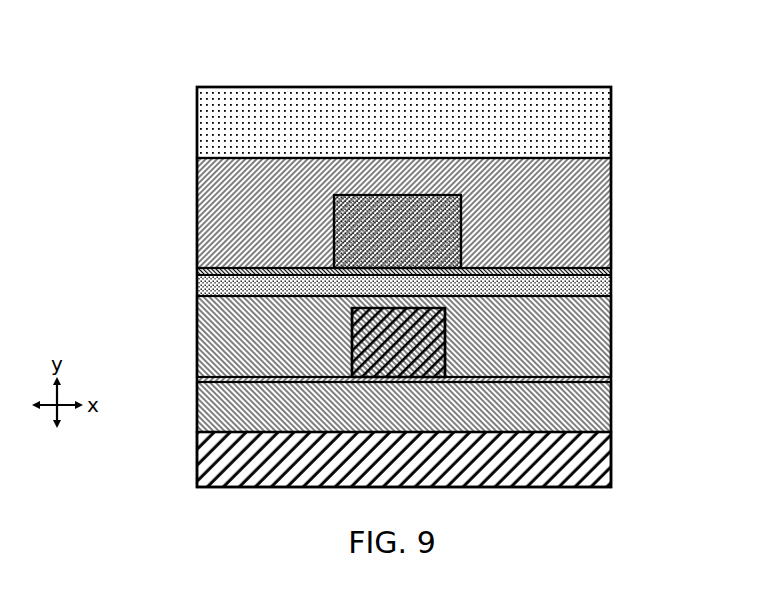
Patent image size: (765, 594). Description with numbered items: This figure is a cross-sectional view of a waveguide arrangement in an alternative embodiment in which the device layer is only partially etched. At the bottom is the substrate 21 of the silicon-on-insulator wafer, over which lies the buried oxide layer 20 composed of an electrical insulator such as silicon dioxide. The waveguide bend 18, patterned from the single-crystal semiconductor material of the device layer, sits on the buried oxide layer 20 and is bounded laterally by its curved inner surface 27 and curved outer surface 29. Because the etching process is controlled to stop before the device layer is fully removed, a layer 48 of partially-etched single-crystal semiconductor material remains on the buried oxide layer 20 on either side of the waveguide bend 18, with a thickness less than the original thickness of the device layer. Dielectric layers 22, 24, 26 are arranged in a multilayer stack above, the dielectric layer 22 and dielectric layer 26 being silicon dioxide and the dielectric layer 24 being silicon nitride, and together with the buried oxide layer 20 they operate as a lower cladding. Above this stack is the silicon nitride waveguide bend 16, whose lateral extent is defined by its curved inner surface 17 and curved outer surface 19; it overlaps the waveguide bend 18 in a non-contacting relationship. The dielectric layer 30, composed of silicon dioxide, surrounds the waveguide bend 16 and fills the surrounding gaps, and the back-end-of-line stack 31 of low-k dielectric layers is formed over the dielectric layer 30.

The waveguide bend 16 is at (415, 246).
The curved inner surface 17 is at (334, 212).
The waveguide bend 18 is at (415, 350).
The curved outer surface 19 is at (463, 207).
The buried oxide (BOX) layer 20 is at (595, 412).
The substrate 21 is at (212, 464).
The dielectric layer 22 is at (595, 356).
The dielectric layer 24 is at (212, 287).
The dielectric layer 26 is at (592, 270).
The curved inner surface 27 is at (351, 341).
The curved outer surface 29 is at (445, 321).
The dielectric layer 30 is at (212, 183).
The back-end-of-line stack 31 is at (582, 114).
The layer of partially-etched single-crystal semiconductor material 48 is at (214, 379).